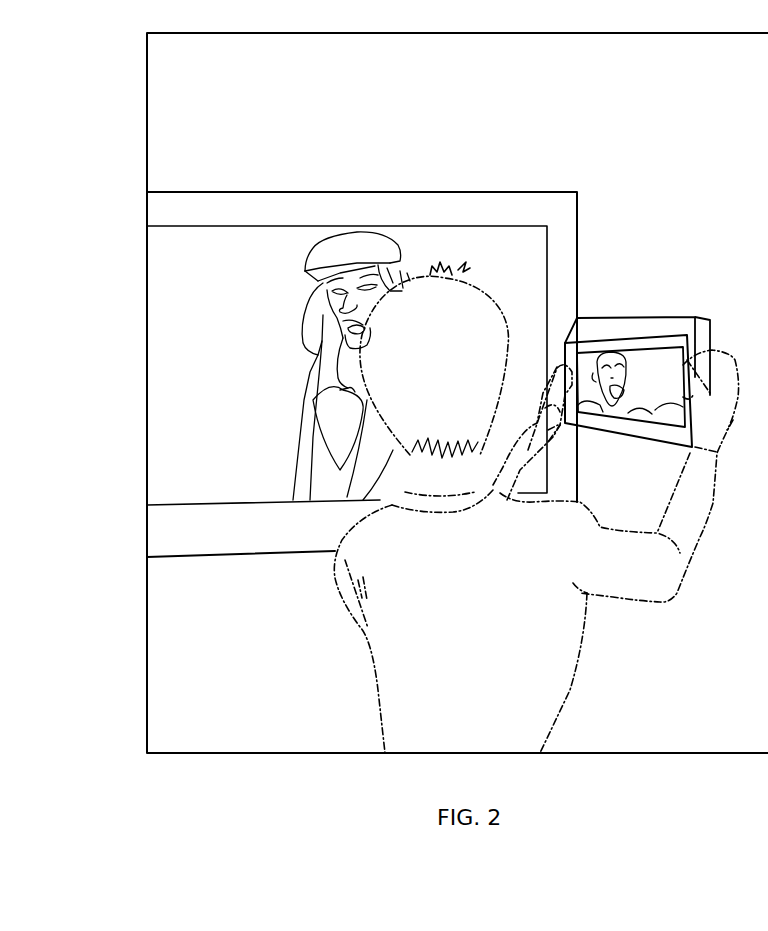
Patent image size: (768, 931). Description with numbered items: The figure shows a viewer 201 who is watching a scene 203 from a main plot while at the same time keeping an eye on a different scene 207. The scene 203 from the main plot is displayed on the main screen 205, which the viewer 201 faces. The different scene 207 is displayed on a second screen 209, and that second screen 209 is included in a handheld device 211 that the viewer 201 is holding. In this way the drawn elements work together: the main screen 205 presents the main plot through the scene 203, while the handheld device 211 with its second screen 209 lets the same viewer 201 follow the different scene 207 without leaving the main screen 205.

The viewer 201 is at (402, 697).
The scene 203 is at (353, 250).
The main screen 205 is at (135, 228).
The different scene 207 is at (618, 413).
The second screen 209 is at (637, 391).
The handheld device 211 is at (603, 427).